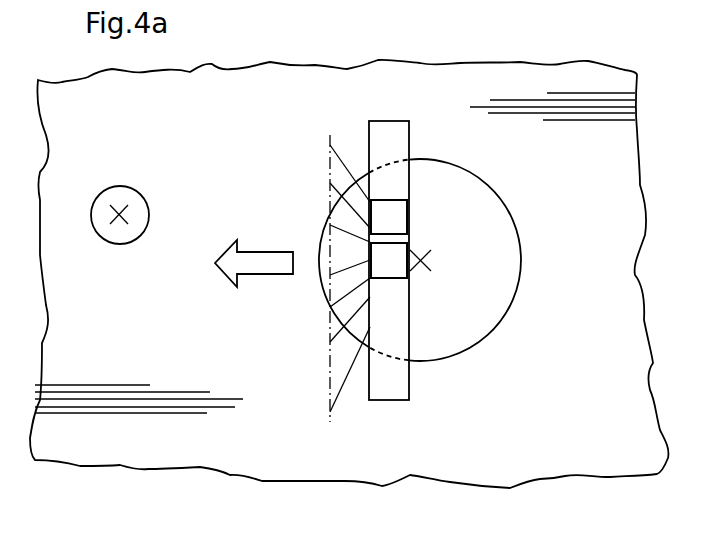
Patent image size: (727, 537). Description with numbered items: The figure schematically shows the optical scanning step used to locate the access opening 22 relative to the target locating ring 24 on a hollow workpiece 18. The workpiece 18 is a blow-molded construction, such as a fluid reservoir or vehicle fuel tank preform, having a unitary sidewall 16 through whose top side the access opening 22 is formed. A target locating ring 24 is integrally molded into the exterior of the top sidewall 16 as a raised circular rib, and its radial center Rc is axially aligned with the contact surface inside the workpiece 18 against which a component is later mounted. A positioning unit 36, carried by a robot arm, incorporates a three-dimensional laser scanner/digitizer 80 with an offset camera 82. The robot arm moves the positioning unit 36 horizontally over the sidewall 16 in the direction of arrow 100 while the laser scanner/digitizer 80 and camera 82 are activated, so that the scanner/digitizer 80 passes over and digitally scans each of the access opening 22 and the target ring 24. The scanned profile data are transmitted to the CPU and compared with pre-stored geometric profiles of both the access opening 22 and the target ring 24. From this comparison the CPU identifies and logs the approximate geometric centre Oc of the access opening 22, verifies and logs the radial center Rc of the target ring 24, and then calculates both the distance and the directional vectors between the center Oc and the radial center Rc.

The sidewall 16 is at (142, 445).
The workpiece 18 is at (595, 385).
The access opening 22 is at (435, 352).
The target locating ring 24 is at (137, 244).
The radial center of the target ring Rc is at (120, 213).
The positioning unit 36 is at (412, 137).
The laser scanner/digitizer 80 is at (389, 271).
The offset camera 82 is at (394, 214).
The geometric centre of the access opening Oc is at (420, 261).
The arrow (direction of movement) 100 is at (272, 262).